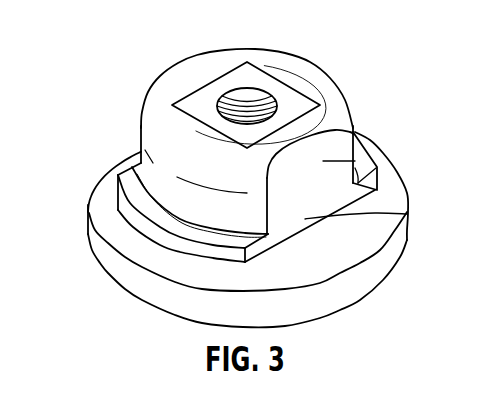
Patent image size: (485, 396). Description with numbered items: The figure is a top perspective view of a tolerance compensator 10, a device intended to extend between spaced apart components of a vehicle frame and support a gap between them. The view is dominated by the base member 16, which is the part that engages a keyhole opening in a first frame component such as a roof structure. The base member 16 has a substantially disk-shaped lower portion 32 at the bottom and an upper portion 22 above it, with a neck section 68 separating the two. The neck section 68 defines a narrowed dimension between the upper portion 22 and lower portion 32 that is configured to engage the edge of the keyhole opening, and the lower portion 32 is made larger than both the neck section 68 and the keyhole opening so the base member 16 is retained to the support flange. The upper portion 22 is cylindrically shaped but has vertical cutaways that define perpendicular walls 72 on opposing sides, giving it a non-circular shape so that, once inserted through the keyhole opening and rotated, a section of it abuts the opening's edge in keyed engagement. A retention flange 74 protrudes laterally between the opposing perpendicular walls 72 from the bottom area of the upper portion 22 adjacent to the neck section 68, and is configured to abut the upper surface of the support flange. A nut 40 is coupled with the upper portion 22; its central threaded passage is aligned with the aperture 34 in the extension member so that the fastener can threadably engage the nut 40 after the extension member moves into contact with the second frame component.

The tolerance compensator 10 is at (112, 77).
The base member 16 is at (126, 146).
The upper portion 22 is at (337, 113).
The lower portion 32 is at (105, 193).
The aperture 34 is at (236, 100).
The nut 40 is at (292, 101).
The neck section 68 is at (407, 214).
The perpendicular walls 72 is at (355, 161).
The retention flange 74 is at (160, 237).